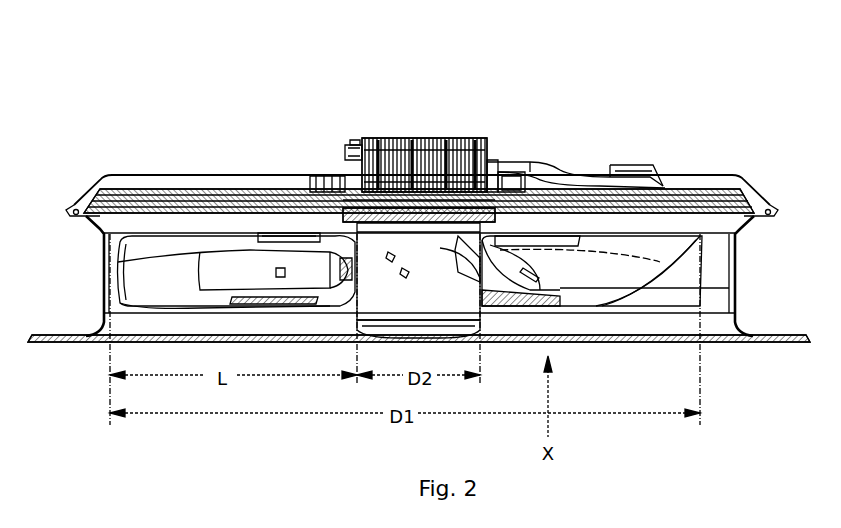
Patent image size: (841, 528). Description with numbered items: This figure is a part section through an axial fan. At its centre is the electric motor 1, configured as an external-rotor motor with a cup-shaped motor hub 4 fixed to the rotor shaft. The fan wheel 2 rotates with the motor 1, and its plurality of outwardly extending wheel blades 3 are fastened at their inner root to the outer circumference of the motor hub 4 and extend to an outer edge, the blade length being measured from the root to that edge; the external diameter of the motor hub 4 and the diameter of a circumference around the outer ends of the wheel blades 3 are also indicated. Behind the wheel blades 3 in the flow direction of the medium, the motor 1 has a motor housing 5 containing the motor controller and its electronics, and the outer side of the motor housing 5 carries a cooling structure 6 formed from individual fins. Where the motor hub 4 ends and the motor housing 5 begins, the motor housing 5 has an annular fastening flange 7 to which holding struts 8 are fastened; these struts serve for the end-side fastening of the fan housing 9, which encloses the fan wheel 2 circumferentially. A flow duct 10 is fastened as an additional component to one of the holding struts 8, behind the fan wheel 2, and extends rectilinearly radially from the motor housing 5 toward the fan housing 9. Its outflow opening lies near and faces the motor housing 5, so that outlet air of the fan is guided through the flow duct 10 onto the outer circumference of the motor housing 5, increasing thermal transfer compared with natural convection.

The motor 1 is at (407, 122).
The fan wheel 2 is at (255, 268).
The wheel blades 3 is at (598, 288).
The motor hub 4 is at (433, 300).
The motor housing 5 is at (437, 136).
The cooling structure 6 is at (490, 138).
The fastening flange 7 is at (330, 180).
The holding struts 8 is at (135, 185).
The fan housing 9 is at (728, 266).
The flow duct 10 is at (600, 183).